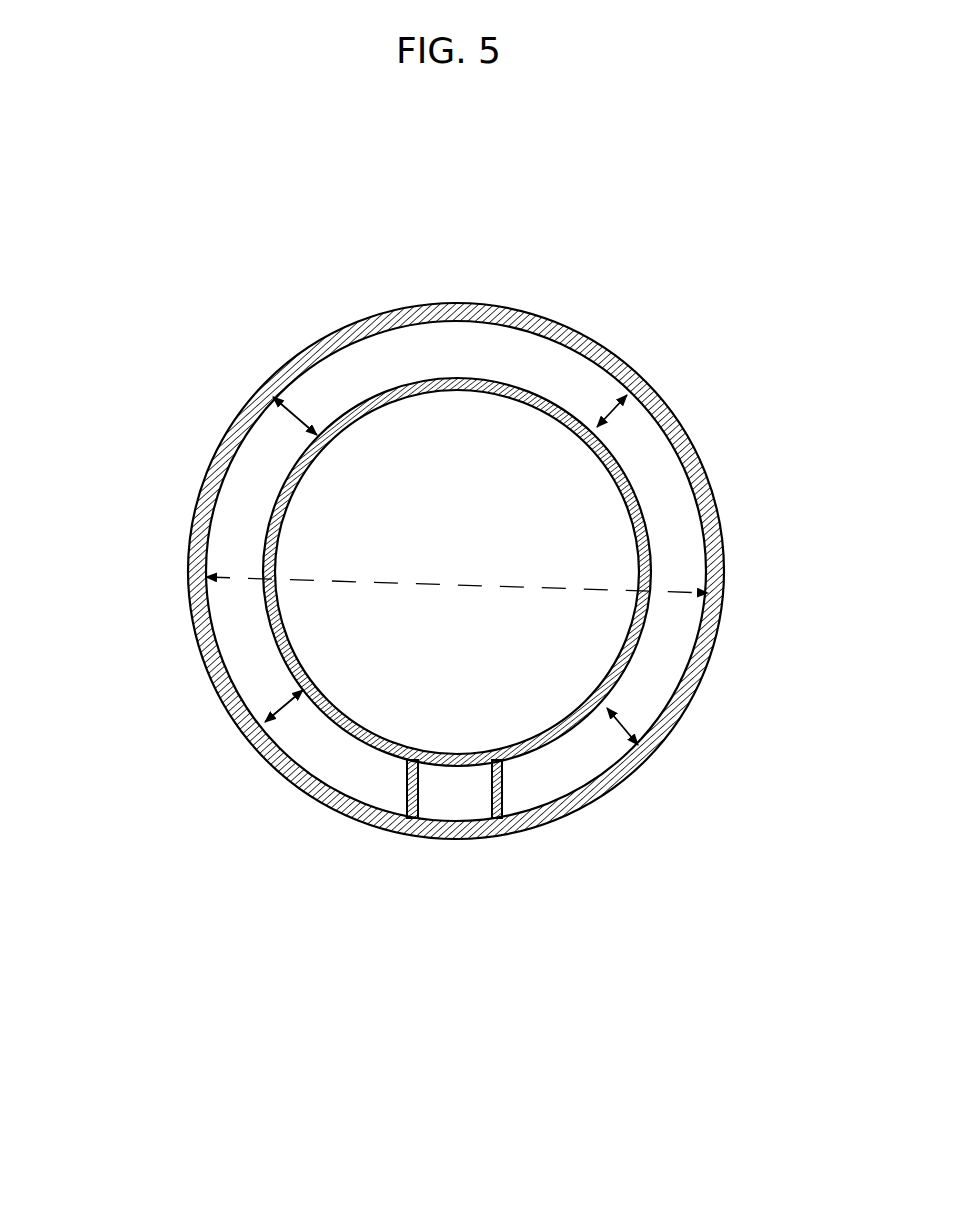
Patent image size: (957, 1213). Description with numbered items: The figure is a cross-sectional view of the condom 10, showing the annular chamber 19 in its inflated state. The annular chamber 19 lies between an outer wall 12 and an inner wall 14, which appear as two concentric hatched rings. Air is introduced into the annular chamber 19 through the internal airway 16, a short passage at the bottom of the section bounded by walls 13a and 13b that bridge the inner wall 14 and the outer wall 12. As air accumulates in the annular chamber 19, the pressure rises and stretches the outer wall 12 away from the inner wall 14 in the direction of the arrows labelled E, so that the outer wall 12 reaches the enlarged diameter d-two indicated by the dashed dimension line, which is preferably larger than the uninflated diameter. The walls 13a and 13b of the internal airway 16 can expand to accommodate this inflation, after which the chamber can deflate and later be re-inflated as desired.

The condom 10 is at (684, 308).
The outer wall 12 is at (717, 490).
The inner wall 14 is at (285, 480).
The annular chamber 19 is at (660, 655).
The wall of the internal airway 13a is at (403, 790).
The wall of the internal airway 13b is at (505, 790).
The internal airway 16 is at (443, 800).